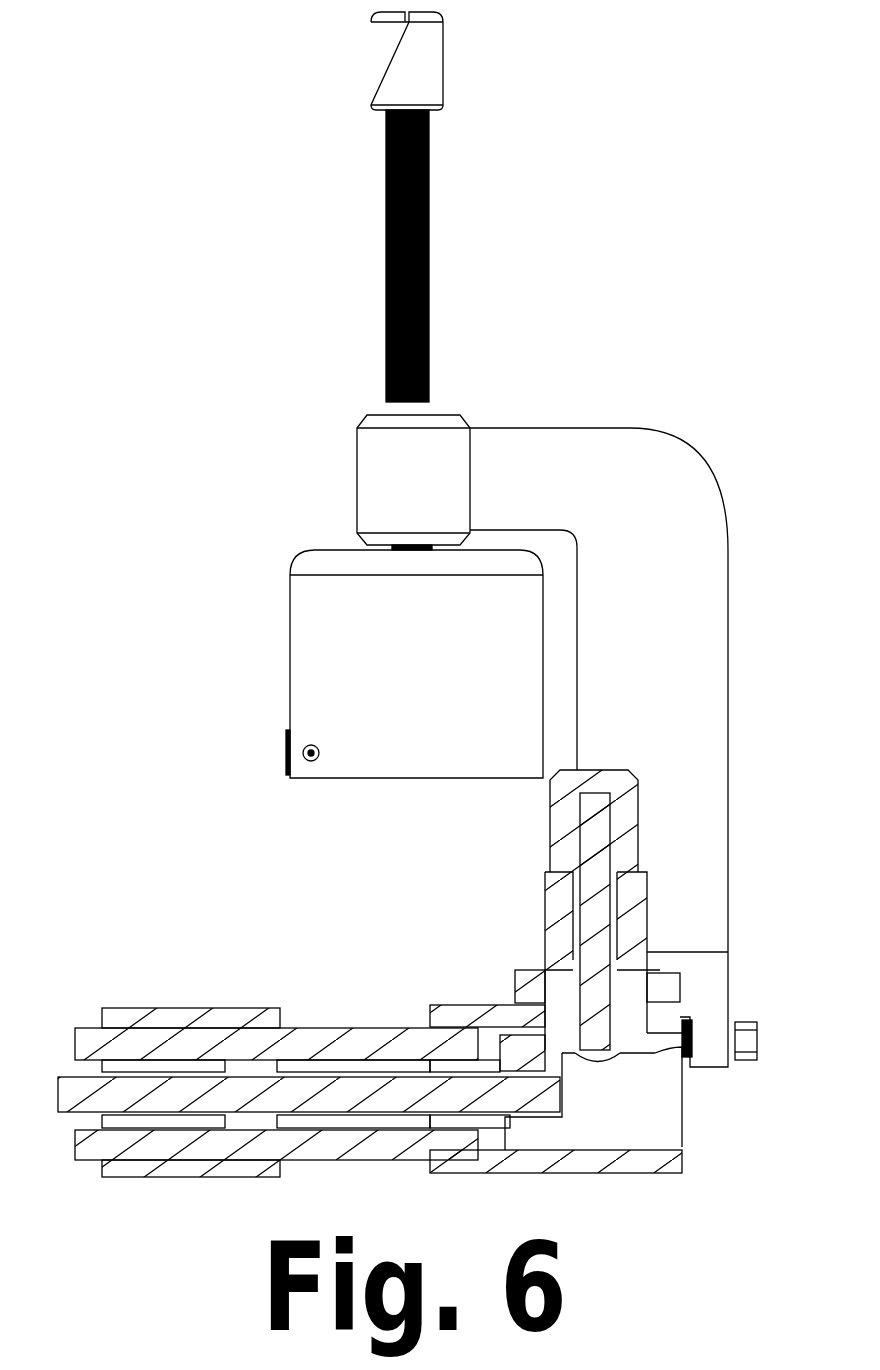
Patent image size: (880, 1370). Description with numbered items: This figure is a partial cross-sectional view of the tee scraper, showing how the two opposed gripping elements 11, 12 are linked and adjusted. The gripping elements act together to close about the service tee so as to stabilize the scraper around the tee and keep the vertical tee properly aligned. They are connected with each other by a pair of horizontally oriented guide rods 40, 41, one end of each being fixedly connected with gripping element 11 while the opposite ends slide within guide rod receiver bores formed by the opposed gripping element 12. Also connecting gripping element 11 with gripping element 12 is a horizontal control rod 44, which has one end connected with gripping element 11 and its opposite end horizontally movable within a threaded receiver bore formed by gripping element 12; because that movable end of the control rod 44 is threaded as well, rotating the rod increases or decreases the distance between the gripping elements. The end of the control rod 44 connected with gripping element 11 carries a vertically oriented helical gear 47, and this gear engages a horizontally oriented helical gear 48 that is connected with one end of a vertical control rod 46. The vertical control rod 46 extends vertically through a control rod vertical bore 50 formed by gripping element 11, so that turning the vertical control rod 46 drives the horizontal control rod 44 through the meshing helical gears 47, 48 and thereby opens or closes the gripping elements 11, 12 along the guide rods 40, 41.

The gripping element 11 is at (430, 1007).
The gripping element 12 is at (143, 1008).
The guide rod 40 is at (76, 1020).
The guide rod 41 is at (75, 1152).
The horizontal control rod 44 is at (255, 1022).
The vertical control rod 46 is at (548, 862).
The vertically oriented helical gear 47 is at (565, 1115).
The horizontally oriented helical gear 48 is at (650, 1047).
The control rod vertical bore 50 is at (520, 975).